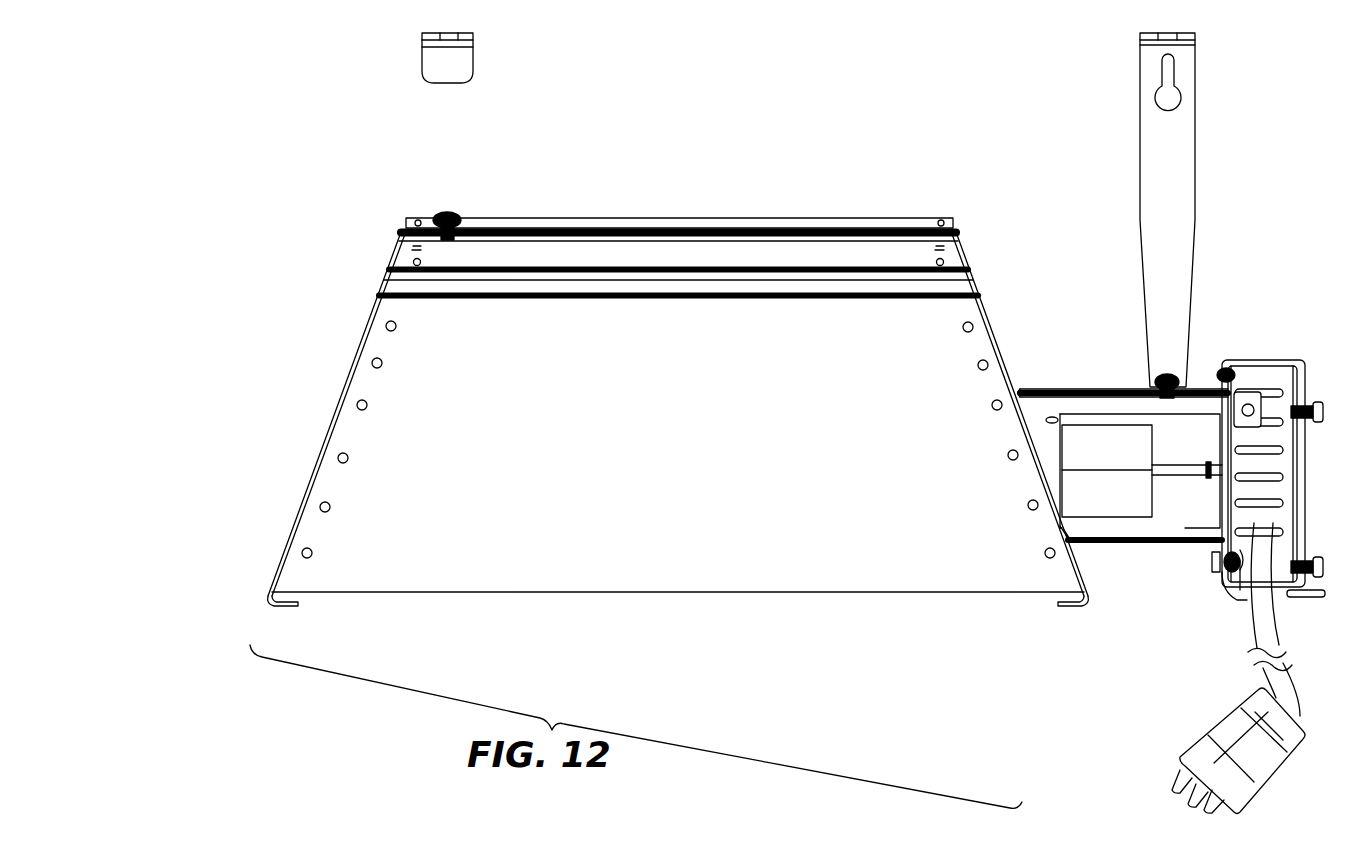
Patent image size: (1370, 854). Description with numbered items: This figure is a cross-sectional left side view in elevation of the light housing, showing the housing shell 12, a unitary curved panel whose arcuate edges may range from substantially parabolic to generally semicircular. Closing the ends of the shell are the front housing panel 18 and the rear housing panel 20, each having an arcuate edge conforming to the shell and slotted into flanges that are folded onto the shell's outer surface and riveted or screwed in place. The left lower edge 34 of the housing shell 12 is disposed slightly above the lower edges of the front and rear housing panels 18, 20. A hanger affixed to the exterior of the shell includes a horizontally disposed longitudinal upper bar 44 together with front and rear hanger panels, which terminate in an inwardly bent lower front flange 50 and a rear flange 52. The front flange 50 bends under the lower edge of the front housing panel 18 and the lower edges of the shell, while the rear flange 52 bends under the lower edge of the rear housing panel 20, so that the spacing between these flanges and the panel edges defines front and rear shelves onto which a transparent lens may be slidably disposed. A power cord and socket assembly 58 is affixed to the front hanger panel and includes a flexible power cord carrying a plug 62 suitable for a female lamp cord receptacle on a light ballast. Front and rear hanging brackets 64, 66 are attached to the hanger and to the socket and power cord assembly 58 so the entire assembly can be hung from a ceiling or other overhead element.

The housing shell 12 is at (527, 322).
The front housing panel 18 is at (996, 336).
The rear housing panel 20 is at (372, 322).
The left lower edge 34 is at (866, 600).
The longitudinal upper bar 44 is at (700, 219).
The lower front flange 50 is at (1076, 606).
The rear flange 52 is at (281, 606).
The power cord and socket assembly 58 is at (1197, 388).
The plug 62 is at (1220, 716).
The front hanging bracket 64 is at (1189, 146).
The rear hanging bracket 66 is at (478, 66).